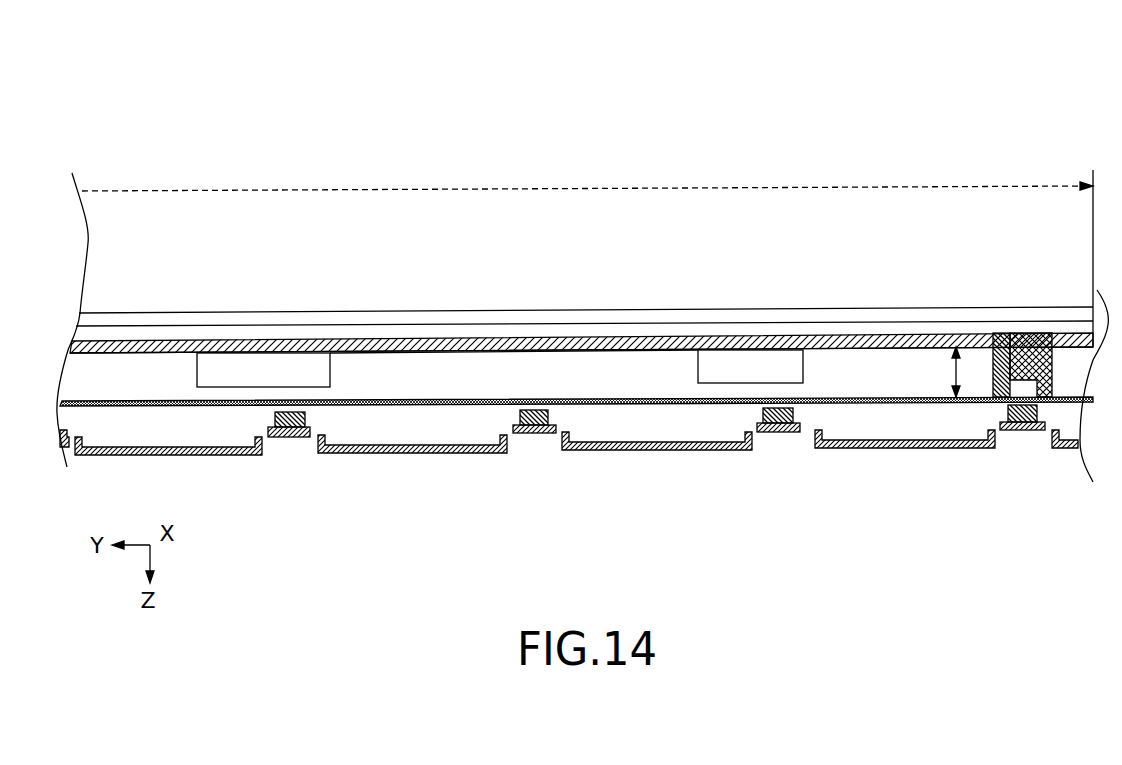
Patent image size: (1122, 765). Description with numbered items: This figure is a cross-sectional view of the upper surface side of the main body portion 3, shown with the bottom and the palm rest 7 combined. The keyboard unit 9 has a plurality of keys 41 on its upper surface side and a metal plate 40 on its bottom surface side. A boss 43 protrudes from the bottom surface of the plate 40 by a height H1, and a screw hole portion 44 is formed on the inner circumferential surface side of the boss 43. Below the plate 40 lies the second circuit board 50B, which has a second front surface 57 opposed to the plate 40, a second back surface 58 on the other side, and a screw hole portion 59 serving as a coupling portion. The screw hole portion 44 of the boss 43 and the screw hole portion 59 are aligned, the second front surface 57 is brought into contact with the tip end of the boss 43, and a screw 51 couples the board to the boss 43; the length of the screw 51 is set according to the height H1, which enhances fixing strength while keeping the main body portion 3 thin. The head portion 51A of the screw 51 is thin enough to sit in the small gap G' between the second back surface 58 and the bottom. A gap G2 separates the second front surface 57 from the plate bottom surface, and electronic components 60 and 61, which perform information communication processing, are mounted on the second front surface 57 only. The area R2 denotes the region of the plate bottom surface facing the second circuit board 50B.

The main body portion 3 is at (526, 276).
The palm rest 7 is at (289, 437).
The keyboard unit 9 is at (497, 497).
The plate 40 is at (863, 393).
The keys 41 is at (237, 455).
The boss 43 is at (990, 370).
The screw hole portion 44 is at (1013, 397).
The second circuit board 50B is at (432, 342).
The screw 51 is at (1017, 333).
The head portion 51A is at (1088, 322).
The second front surface 57 is at (367, 355).
The second back surface 58 is at (357, 352).
The screw hole portion 59 is at (1031, 333).
The electronic component 60 is at (262, 368).
The electronic component 61 is at (758, 362).
The gap G2 is at (142, 382).
The gap G' is at (650, 295).
The area R2 is at (587, 175).
The height H1 is at (936, 372).